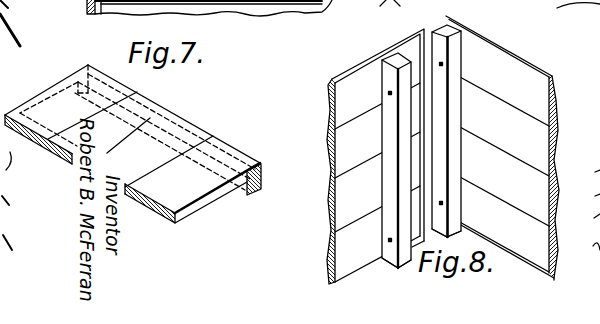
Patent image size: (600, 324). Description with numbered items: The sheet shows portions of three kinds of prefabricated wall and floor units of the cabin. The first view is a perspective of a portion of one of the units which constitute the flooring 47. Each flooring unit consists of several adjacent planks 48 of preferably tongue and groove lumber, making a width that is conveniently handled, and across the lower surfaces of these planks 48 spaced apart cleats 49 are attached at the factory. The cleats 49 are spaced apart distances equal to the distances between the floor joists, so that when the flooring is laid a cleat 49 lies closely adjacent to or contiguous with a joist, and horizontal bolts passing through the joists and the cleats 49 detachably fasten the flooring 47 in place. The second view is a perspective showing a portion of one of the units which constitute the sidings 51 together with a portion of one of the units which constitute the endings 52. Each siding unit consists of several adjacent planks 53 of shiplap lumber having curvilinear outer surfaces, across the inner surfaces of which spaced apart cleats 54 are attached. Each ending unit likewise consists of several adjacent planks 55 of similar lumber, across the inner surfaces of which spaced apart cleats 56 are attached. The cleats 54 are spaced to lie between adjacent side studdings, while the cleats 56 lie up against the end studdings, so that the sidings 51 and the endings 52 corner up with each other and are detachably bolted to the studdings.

In FIG. 7, the flooring 47 is at (210, 215).
In FIG. 7, the planks 48 is at (195, 175).
In FIG. 7, the cleats 49 is at (257, 196).
In FIG. 8, the sidings 51 is at (321, 159).
In FIG. 8, the endings 52 is at (540, 52).
In FIG. 8, the planks 53 is at (347, 165).
In FIG. 8, the cleats 54 is at (392, 210).
In FIG. 8, the planks 55 is at (559, 108).
In FIG. 8, the cleats 56 is at (443, 155).